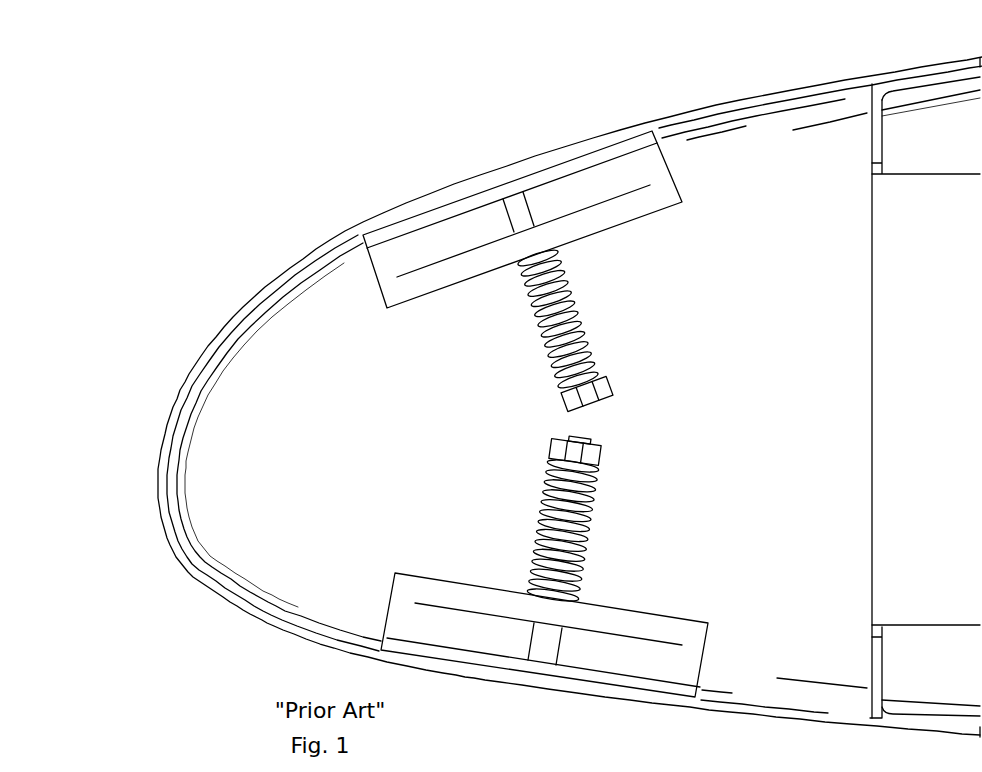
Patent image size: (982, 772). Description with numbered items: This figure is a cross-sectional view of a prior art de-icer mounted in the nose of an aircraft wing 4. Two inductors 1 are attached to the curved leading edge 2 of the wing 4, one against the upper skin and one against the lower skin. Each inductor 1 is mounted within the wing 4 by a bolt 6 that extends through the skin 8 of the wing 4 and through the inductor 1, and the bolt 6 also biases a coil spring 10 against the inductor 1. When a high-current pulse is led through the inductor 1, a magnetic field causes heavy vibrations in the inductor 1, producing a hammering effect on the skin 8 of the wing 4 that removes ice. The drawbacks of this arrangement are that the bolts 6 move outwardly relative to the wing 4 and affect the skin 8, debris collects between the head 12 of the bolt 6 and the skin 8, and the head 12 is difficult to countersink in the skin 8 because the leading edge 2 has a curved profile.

The inductor 1 is at (448, 380).
The leading edge 2 is at (203, 355).
The wing 4 is at (981, 44).
The bolt 6 is at (527, 212).
The skin 8 is at (330, 246).
The coil spring 10 is at (580, 300).
The head 12 is at (493, 168).